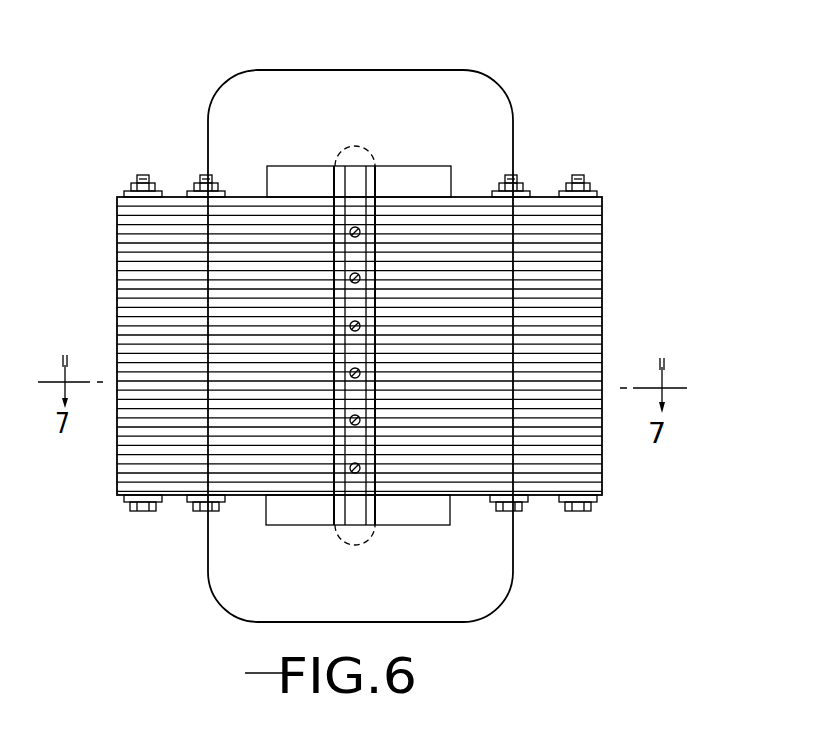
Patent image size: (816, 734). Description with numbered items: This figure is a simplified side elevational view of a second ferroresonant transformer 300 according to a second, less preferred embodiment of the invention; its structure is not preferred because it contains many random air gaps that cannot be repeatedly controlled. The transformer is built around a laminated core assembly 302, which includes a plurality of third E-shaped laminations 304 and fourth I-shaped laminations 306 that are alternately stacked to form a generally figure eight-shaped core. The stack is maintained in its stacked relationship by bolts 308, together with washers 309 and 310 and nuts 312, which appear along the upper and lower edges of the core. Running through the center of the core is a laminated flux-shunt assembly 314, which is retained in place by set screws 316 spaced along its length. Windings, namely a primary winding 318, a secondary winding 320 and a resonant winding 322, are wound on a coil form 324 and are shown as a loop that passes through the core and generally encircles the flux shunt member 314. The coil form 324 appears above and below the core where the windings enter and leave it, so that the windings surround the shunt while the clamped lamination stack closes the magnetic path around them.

The second ferroresonant transformer 300 is at (409, 317).
The laminated core assembly 302 is at (636, 210).
The third E-shaped laminations 304 is at (122, 312).
The fourth I-shaped laminations 306 is at (122, 358).
The bolts 308 is at (143, 512).
The washers 309 is at (184, 503).
The washers 310 is at (183, 196).
The nuts 312 is at (198, 190).
The laminated flux-shunt assembly 314 is at (387, 285).
The set screws 316 is at (360, 275).
The primary winding 318 is at (350, 80).
The secondary winding 320 is at (360, 317).
The resonant winding 322 is at (360, 317).
The coil form 324 is at (300, 177).